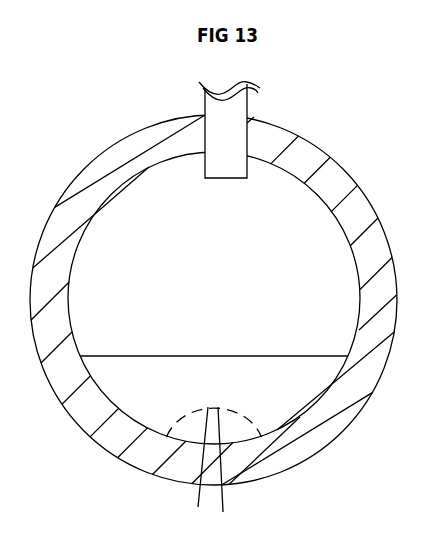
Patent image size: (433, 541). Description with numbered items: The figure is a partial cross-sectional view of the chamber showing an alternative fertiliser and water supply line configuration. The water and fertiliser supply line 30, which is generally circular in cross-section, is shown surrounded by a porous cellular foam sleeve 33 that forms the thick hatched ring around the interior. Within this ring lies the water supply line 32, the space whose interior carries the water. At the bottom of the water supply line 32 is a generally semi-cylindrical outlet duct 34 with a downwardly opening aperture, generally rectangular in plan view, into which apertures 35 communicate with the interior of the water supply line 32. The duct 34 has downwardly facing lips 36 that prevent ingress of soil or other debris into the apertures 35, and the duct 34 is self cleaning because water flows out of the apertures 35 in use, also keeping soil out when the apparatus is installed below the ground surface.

The water and fertiliser supply line 30 is at (300, 176).
The water supply line 32 is at (112, 380).
The porous cellular foam sleeve 33 is at (359, 203).
The outlet duct 34 is at (195, 466).
The apertures 35 is at (229, 469).
The downwardly facing lips 36 is at (167, 432).